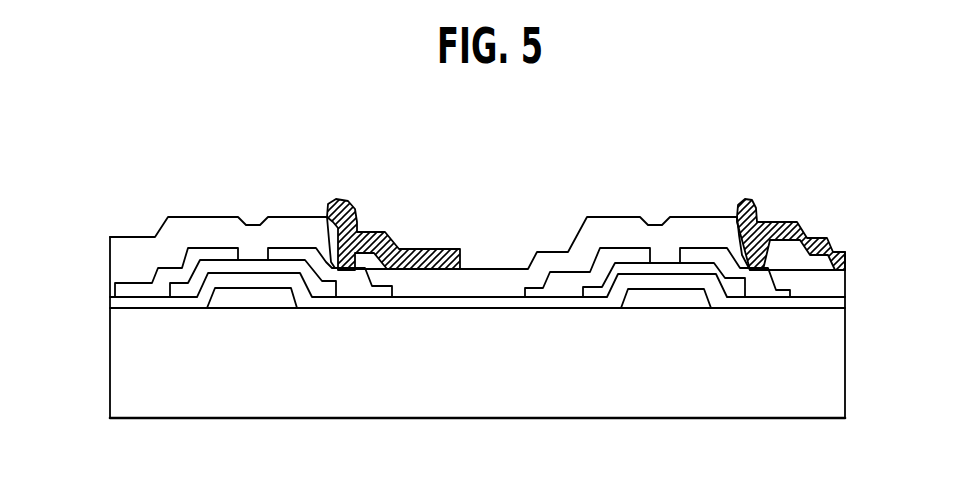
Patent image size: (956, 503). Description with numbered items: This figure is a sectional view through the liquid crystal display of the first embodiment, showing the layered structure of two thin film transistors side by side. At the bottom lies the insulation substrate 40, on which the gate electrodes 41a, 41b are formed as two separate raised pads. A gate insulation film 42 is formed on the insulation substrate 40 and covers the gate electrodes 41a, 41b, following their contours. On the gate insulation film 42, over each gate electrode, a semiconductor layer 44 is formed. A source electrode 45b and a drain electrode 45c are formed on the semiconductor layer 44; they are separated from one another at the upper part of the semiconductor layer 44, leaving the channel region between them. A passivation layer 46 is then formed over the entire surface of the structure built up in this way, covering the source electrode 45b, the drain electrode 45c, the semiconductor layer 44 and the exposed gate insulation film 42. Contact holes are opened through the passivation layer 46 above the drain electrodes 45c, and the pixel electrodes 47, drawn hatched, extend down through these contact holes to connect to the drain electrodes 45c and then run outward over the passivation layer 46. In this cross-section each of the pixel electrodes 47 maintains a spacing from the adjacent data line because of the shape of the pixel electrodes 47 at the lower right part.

The insulation substrate 40 is at (840, 381).
The gate electrode 41a is at (252, 300).
The gate electrode 41b is at (667, 300).
The gate insulation film 42 is at (840, 303).
The semiconductor layer 44 is at (215, 265).
The source electrode 45b is at (138, 291).
The drain electrode 45c is at (298, 253).
The passivation layer 46 is at (552, 262).
The pixel electrode 47 is at (429, 248).